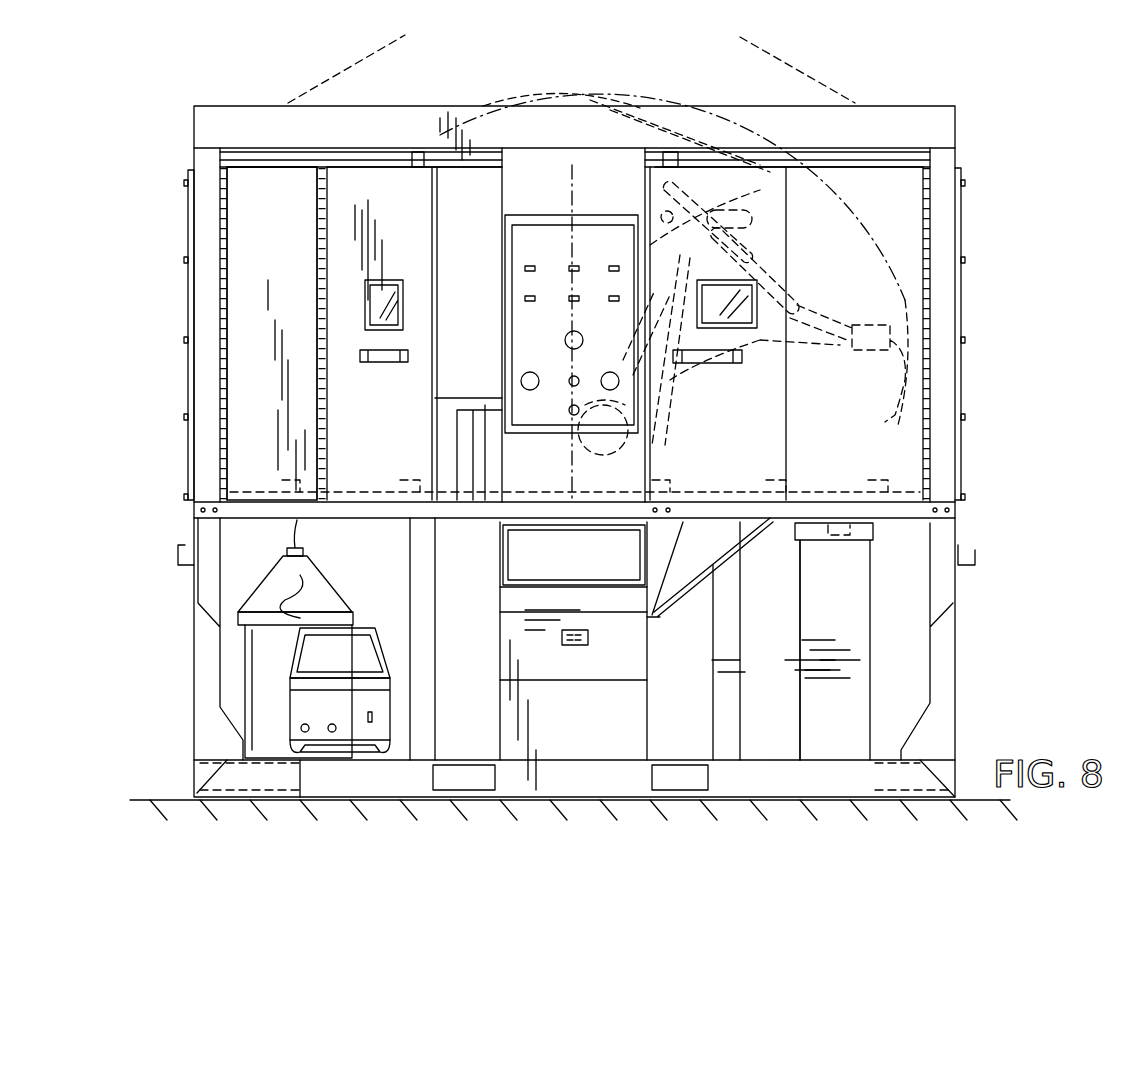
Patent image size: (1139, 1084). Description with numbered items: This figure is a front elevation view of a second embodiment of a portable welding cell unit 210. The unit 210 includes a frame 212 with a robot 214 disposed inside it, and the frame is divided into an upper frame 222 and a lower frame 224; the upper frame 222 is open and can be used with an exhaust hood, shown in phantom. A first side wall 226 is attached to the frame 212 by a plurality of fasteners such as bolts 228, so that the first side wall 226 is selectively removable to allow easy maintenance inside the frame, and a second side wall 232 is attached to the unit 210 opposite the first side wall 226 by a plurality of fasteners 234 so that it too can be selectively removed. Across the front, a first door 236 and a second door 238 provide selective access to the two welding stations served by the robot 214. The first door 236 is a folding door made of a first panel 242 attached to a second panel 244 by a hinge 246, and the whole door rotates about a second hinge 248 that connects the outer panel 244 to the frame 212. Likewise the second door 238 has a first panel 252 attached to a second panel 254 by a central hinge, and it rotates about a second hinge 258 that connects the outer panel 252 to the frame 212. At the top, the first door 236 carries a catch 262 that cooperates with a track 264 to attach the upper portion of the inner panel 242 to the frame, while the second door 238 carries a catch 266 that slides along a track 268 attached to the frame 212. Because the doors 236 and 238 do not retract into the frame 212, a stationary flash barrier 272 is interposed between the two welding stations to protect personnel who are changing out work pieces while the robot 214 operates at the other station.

The portable welding cell unit 210 is at (997, 78).
The frame 212 is at (905, 106).
The robot 214 is at (760, 250).
The upper frame 222 is at (183, 152).
The lower frame 224 is at (175, 677).
The first side wall 226 is at (188, 213).
The bolts 228 is at (184, 183).
The second side wall 232 is at (962, 398).
The fasteners 234 is at (962, 340).
The first door 236 is at (248, 388).
The second door 238 is at (895, 452).
The first panel 242 is at (405, 225).
The second panel 244 is at (243, 235).
The hinge 246 is at (322, 282).
The second hinge 248 is at (222, 358).
The first panel 252 is at (900, 250).
The second panel 254 is at (735, 470).
The second hinge 258 is at (925, 330).
The catch 262 is at (417, 152).
The track 264 is at (372, 158).
The catch 266 is at (672, 152).
The track 268 is at (780, 157).
The flash barrier 272 is at (572, 205).